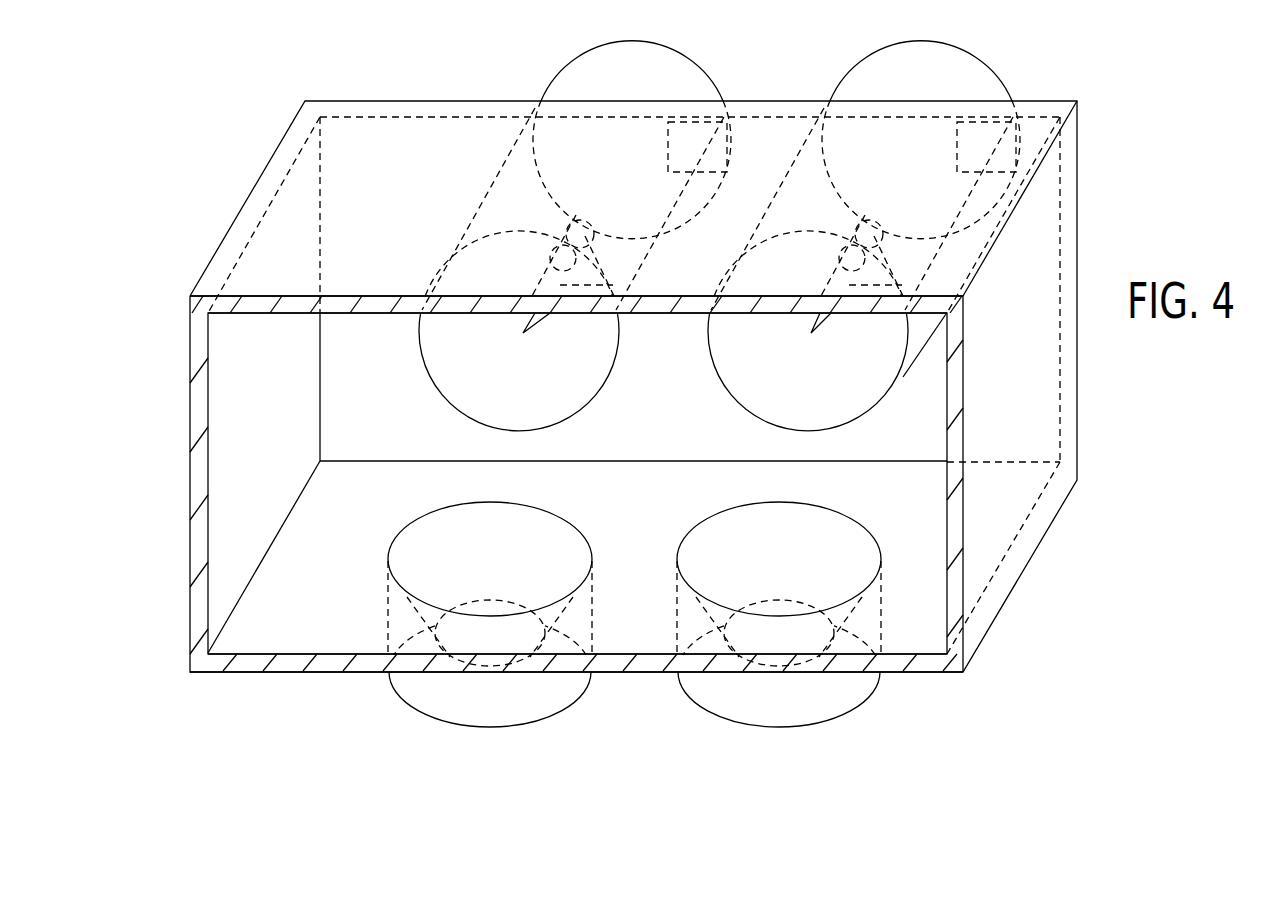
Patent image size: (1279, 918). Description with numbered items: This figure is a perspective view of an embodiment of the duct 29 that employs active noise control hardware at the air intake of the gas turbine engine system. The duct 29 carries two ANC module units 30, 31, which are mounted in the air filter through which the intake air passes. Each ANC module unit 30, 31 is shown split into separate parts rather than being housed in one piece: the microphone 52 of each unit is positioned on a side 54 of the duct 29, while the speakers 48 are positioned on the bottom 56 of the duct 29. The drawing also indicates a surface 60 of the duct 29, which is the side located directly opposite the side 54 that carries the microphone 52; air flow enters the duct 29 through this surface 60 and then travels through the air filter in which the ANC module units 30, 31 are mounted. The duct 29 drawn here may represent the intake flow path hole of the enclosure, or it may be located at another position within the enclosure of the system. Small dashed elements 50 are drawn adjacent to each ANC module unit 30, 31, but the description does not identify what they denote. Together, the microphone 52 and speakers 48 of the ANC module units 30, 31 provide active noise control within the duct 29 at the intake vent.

The duct 29 is at (194, 170).
The ANC module unit 30 is at (887, 150).
The ANC module unit 31 is at (578, 158).
The speaker 48 is at (523, 547).
The sensor 50 is at (730, 150).
The microphone 52 is at (577, 214).
The side 54 is at (383, 147).
The bottom 56 is at (278, 638).
The surface 60 is at (343, 603).